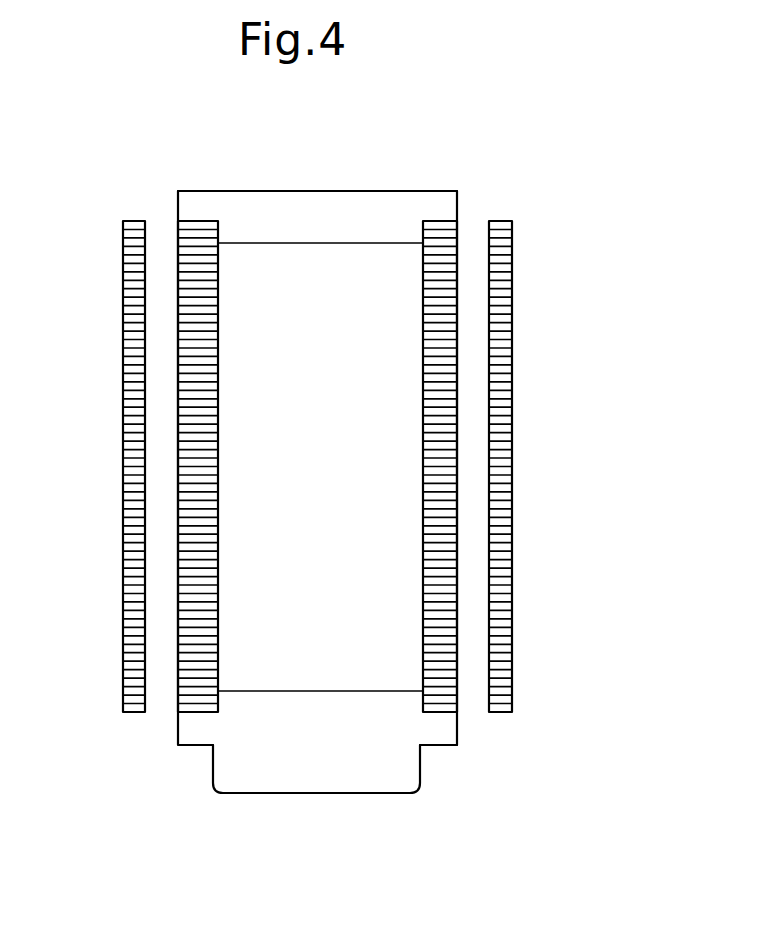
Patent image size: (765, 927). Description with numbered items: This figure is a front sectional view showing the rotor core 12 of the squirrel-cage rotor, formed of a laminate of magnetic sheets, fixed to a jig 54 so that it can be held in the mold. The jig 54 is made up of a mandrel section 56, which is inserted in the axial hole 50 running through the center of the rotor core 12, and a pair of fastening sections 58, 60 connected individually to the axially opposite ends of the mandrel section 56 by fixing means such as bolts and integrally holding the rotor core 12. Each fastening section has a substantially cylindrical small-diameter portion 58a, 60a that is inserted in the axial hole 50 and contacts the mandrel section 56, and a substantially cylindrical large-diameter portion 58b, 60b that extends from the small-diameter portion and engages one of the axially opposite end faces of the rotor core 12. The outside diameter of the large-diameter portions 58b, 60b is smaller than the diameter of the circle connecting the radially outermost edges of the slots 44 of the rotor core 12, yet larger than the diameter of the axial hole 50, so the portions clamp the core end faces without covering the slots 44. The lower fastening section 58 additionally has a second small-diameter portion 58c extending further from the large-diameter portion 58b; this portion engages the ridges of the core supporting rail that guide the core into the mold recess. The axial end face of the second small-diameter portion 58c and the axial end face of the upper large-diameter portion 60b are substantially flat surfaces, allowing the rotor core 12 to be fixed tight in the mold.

The rotor core 12 is at (513, 383).
The slots 44 is at (140, 435).
The axial hole 50 is at (218, 546).
The jig 54 is at (358, 192).
The mandrel section 56 is at (300, 632).
The fastening section 58 is at (372, 775).
The small-diameter portion 58a is at (428, 703).
The large-diameter portion 58b is at (457, 732).
The second small-diameter portion 58c is at (422, 773).
The fastening section 60 is at (268, 208).
The small-diameter portion 60a is at (426, 238).
The large-diameter portion 60b is at (458, 205).